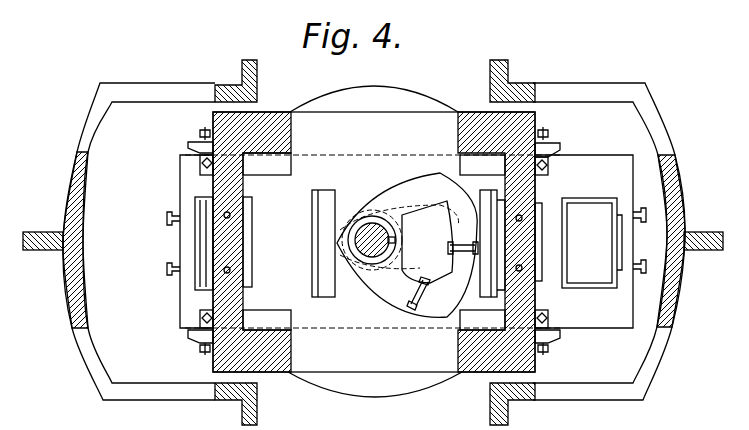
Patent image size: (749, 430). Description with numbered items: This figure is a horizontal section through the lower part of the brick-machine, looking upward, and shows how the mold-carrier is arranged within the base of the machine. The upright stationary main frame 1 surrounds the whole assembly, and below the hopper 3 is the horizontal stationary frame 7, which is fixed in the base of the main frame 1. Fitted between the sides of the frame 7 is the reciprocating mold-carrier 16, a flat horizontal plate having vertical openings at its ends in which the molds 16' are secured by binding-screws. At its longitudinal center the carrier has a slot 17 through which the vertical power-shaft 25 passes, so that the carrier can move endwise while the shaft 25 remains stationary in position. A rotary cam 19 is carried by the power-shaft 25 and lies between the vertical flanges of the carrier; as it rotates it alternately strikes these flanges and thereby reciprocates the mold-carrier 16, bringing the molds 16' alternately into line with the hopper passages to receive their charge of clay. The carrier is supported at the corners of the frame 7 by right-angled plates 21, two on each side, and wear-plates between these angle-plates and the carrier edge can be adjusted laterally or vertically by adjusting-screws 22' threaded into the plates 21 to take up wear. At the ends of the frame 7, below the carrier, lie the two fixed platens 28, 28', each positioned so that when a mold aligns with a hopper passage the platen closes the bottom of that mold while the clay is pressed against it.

The main frame 1 is at (373, 242).
The hopper 3 is at (370, 397).
The horizontal stationary frame 7 is at (372, 242).
The mold-carrier 16 is at (406, 241).
The molds 16' is at (382, 243).
The slot 17 is at (440, 255).
The rotary cam 19 is at (408, 245).
The right-angled plates 21 is at (195, 141).
The adjusting-screws 22' is at (363, 236).
The vertical power-shaft 25 is at (362, 216).
The fixed platen 28 is at (260, 242).
The fixed platen 28' is at (555, 255).